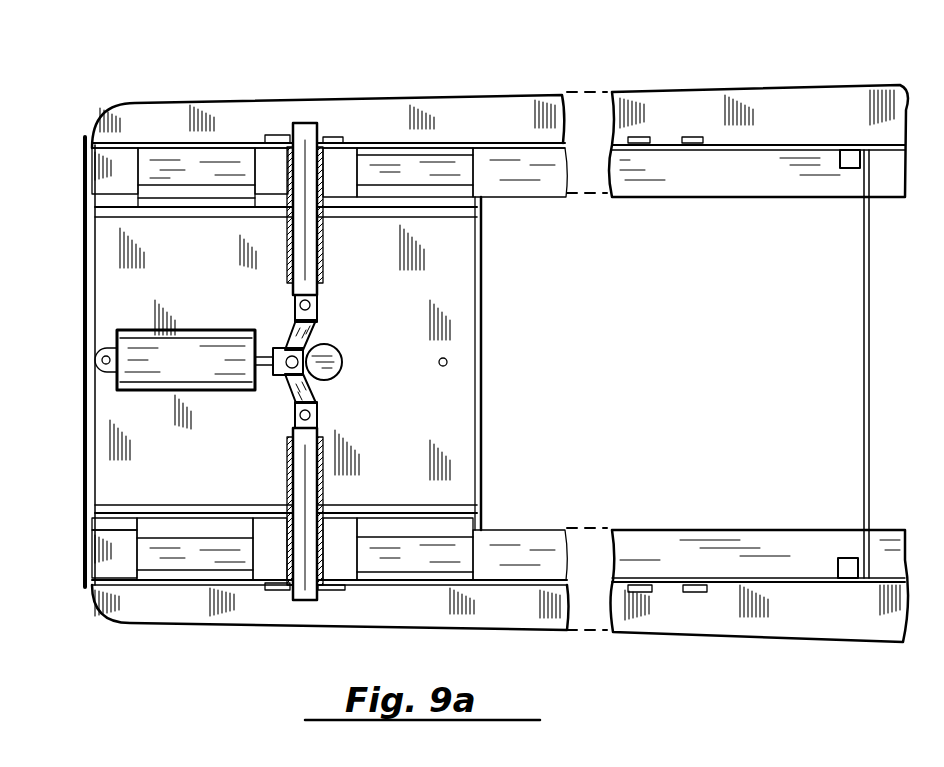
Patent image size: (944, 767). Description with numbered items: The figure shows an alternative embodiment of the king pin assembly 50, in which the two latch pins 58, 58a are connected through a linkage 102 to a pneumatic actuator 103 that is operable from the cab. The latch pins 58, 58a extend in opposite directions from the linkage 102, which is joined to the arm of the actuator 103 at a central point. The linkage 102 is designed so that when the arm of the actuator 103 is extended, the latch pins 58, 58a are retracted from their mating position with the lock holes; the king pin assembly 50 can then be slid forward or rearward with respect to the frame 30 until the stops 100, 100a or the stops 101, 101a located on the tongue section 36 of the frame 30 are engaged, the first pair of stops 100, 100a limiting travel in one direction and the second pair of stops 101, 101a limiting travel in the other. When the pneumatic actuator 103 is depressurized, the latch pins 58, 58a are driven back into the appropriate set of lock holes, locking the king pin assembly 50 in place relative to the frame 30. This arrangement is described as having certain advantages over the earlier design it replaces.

The tongue section 36 is at (440, 98).
The king pin assembly 50 is at (68, 500).
The stop 100 is at (118, 165).
The stop 100a is at (112, 552).
The frame 30 is at (758, 363).
The stop 101 is at (848, 150).
The stop 101a is at (850, 570).
The latch pin 58 is at (307, 248).
The latch pin 58a is at (307, 468).
The linkage 102 is at (319, 389).
The pneumatic actuator 103 is at (199, 360).